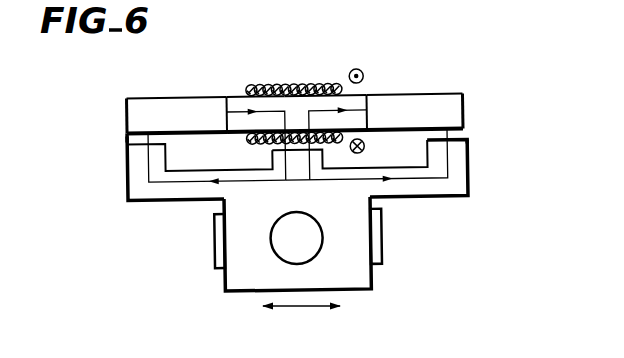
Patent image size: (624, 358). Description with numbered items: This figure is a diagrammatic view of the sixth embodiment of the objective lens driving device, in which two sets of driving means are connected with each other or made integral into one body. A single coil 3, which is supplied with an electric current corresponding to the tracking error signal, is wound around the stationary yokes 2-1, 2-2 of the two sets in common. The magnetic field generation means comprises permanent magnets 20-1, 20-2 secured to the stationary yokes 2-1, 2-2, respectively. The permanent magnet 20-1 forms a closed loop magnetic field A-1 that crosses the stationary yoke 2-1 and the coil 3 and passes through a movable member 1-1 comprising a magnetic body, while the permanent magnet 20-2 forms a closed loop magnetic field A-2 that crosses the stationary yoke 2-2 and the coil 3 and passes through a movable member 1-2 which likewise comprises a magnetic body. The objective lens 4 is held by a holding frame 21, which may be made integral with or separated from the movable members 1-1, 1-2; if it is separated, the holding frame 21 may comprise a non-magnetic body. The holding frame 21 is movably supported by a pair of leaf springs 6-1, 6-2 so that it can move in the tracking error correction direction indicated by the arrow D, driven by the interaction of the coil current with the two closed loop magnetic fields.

The permanent magnet 20-2 is at (180, 104).
The permanent magnet 20-1 is at (422, 100).
The stationary yoke 2-2 is at (237, 100).
The stationary yoke 2-1 is at (354, 103).
The coil 3 is at (304, 86).
The movable member 1-2 is at (148, 170).
The movable member 1-1 is at (424, 184).
The holding frame 21 is at (355, 270).
The closed loop magnetic field A-2 is at (137, 157).
The closed loop magnetic field A-1 is at (447, 153).
The objective lens 4 is at (277, 248).
The leaf spring 6-2 is at (213, 250).
The leaf spring 6-1 is at (376, 232).
The tracking error correction direction D is at (302, 307).